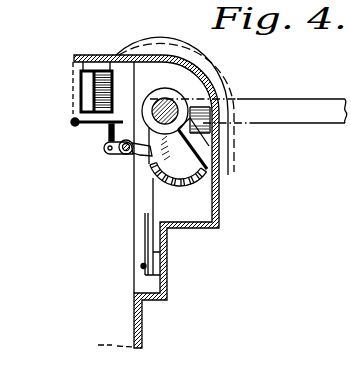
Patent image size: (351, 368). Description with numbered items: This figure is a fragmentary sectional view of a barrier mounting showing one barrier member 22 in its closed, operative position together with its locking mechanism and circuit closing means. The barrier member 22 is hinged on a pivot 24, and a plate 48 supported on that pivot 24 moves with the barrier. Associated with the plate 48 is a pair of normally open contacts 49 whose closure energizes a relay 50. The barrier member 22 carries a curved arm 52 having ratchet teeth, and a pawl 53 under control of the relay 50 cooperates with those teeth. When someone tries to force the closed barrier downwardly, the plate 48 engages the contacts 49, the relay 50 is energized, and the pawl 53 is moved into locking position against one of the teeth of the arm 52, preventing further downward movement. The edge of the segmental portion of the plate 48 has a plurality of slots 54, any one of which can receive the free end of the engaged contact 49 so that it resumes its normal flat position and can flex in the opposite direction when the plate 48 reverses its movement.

The barrier member 22 is at (287, 99).
The pivot 24 is at (168, 103).
The plate 48 is at (224, 158).
The contacts 49 is at (162, 251).
The relay 50 is at (95, 117).
The curved arm 52 is at (216, 166).
The pawl 53 is at (142, 153).
The slots 54 is at (194, 181).